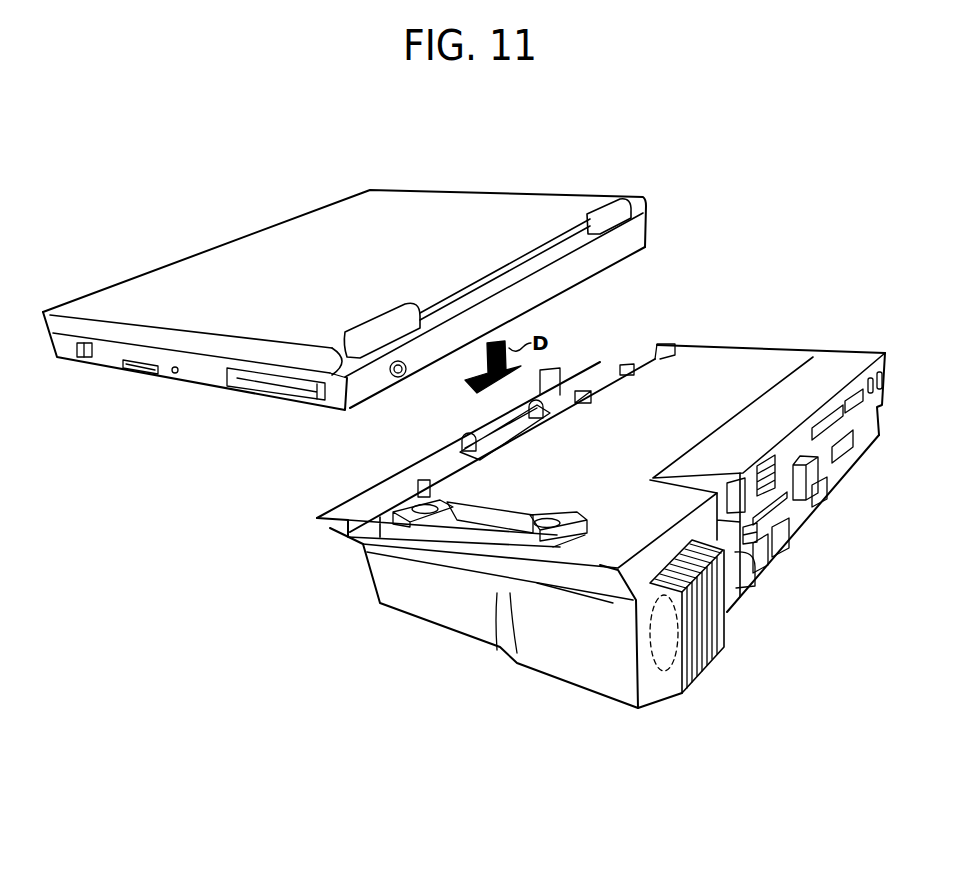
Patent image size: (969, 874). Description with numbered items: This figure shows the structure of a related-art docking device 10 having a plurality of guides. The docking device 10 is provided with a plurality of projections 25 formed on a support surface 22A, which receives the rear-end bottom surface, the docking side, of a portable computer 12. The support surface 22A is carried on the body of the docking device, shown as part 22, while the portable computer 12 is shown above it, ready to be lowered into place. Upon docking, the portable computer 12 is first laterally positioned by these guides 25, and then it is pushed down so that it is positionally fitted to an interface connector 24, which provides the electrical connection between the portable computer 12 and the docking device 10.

The docking cartridge 10 is at (575, 483).
The portable computer (laptop) 12 is at (657, 230).
The cartridge body 22 is at (343, 535).
The front rail / latch mounting 22A is at (367, 500).
The latch track 24 is at (497, 424).
The guide pins 25 is at (462, 446).